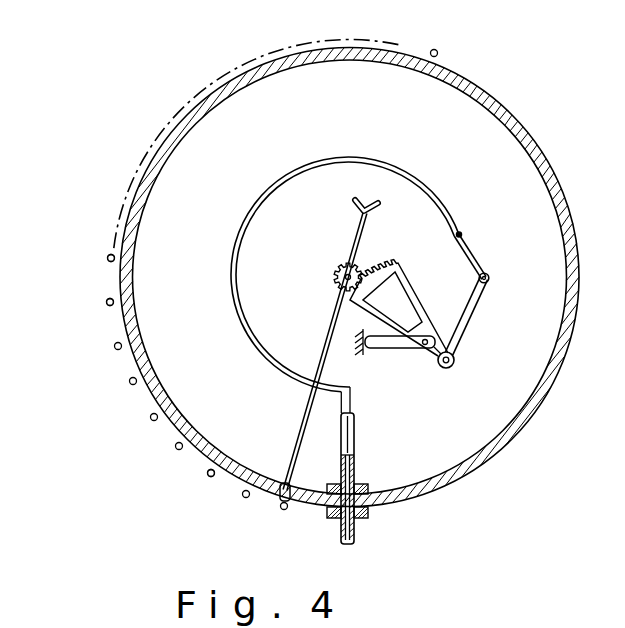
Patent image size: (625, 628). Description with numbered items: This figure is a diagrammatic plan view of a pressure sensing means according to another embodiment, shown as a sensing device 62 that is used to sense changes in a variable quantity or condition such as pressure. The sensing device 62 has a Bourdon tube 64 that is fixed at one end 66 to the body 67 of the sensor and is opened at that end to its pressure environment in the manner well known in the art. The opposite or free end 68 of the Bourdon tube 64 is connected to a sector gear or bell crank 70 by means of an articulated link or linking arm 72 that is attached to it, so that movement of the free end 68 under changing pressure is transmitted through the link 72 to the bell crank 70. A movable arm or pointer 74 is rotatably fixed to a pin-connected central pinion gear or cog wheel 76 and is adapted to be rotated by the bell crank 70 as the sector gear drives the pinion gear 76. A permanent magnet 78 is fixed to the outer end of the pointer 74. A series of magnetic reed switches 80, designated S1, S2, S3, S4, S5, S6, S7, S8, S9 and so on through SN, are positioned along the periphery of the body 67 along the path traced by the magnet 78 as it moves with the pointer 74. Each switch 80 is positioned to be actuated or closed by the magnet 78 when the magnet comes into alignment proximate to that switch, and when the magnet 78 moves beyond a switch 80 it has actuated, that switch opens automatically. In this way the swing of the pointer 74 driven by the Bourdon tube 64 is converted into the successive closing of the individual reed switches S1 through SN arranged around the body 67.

The sensing device 62 is at (155, 112).
The Bourdon tube 64 is at (302, 163).
The fixed end 66 is at (355, 463).
The body 67 is at (413, 498).
The free end 68 is at (460, 220).
The sector gear 70 is at (411, 297).
The articulated link 72 is at (474, 306).
The pointer 74 is at (326, 345).
The central pinion gear 76 is at (336, 269).
The permanent magnet 78 is at (283, 482).
The magnetic reed switches 80 is at (115, 258).
The reed switch S1 is at (289, 521).
The reed switch S2 is at (238, 509).
The reed switch S3 is at (201, 484).
The reed switch S4 is at (164, 454).
The reed switch S5 is at (139, 424).
The reed switch S6 is at (118, 386).
The reed switch S7 is at (104, 351).
The reed switch S8 is at (93, 306).
The reed switch S9 is at (95, 266).
The reed switch Sn SN is at (446, 44).